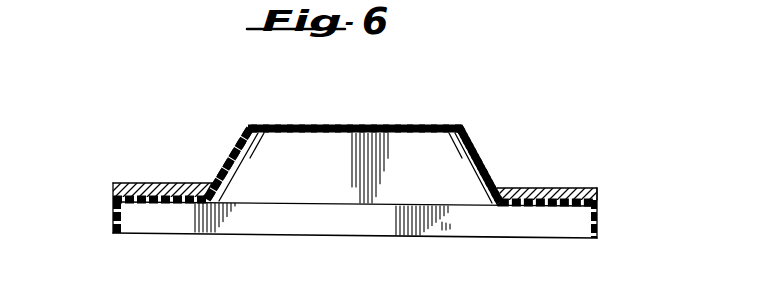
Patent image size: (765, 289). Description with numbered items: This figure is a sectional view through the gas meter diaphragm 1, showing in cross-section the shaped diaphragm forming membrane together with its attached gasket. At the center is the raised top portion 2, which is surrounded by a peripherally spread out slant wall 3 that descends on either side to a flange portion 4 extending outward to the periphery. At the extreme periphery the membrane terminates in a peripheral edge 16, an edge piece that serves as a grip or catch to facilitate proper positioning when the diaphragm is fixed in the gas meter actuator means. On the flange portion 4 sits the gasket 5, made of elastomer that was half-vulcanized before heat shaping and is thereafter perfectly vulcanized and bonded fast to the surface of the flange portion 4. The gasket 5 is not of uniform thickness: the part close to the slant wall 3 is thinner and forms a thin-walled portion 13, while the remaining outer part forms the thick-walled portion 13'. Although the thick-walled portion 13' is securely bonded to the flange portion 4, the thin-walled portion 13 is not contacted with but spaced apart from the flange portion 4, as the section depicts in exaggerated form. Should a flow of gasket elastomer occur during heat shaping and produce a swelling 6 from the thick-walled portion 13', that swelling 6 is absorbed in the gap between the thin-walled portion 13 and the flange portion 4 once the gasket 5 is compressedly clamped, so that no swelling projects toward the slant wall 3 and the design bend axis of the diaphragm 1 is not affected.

The diaphragm 1 is at (383, 123).
The top portion 2 is at (337, 123).
The slant wall 3 is at (233, 147).
The flange portion 4 is at (142, 185).
The gasket 5 is at (115, 182).
The swelling 6 is at (197, 232).
The thin-walled portion 13 is at (353, 198).
The thick-walled portion 13' is at (355, 168).
The peripheral edge 16 is at (113, 217).